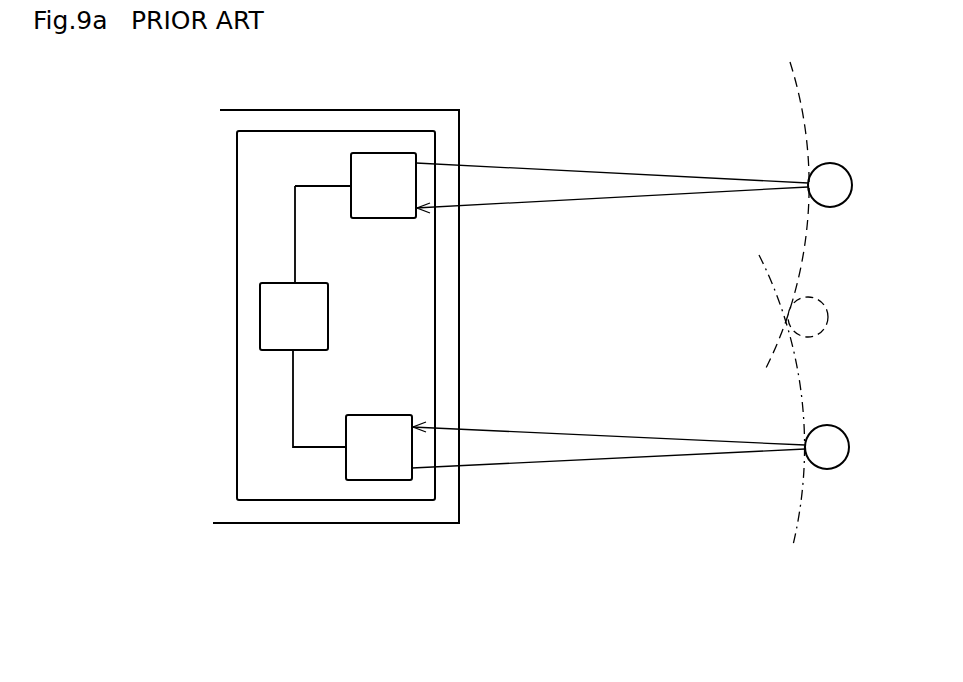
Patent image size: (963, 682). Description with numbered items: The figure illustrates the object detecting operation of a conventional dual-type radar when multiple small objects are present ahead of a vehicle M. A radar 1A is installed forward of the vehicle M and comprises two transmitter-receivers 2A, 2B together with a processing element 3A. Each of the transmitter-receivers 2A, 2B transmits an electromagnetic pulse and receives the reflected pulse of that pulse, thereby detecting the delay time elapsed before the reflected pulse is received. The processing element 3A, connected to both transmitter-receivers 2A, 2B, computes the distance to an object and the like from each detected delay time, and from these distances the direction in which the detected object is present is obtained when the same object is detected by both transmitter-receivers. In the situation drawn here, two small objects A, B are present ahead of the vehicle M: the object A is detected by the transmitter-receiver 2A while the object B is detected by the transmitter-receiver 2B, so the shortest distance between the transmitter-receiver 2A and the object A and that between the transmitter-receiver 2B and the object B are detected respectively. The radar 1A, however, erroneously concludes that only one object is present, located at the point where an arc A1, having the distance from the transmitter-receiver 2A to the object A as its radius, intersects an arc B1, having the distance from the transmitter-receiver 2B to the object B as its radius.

The vehicle M is at (243, 110).
The radar 1A is at (309, 131).
The transmitter-receiver 2A is at (383, 160).
The transmitter-receiver 2B is at (377, 470).
The processing element 3A is at (260, 314).
The object A is at (830, 185).
The object B is at (827, 447).
The arc A1 is at (787, 204).
The arc B1 is at (782, 418).